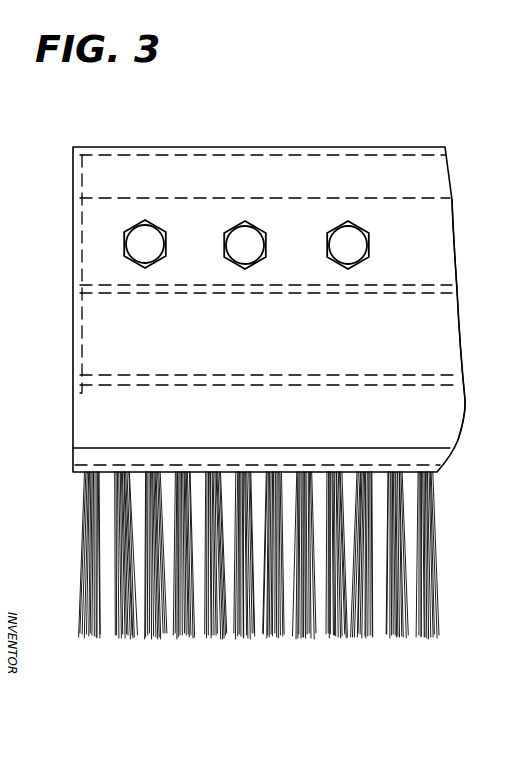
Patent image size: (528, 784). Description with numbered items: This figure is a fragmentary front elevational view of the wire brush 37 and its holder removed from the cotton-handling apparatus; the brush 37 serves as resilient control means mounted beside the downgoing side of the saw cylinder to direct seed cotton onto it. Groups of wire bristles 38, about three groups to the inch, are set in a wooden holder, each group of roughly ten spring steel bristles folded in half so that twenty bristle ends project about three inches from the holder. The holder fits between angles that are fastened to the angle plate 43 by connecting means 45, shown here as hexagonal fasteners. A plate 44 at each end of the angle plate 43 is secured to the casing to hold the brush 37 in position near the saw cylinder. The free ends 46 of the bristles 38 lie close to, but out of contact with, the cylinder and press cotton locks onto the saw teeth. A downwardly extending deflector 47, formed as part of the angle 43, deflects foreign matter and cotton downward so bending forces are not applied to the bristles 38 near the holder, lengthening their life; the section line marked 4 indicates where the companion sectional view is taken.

The section line 4- 4 is at (300, 140).
The wire brush 37 is at (68, 338).
The wire bristles 38 is at (432, 521).
The angle 43 is at (281, 335).
The plate 44 is at (82, 220).
The connecting means 45 is at (155, 247).
The free ends 46 is at (160, 640).
The deflector 47 is at (455, 410).